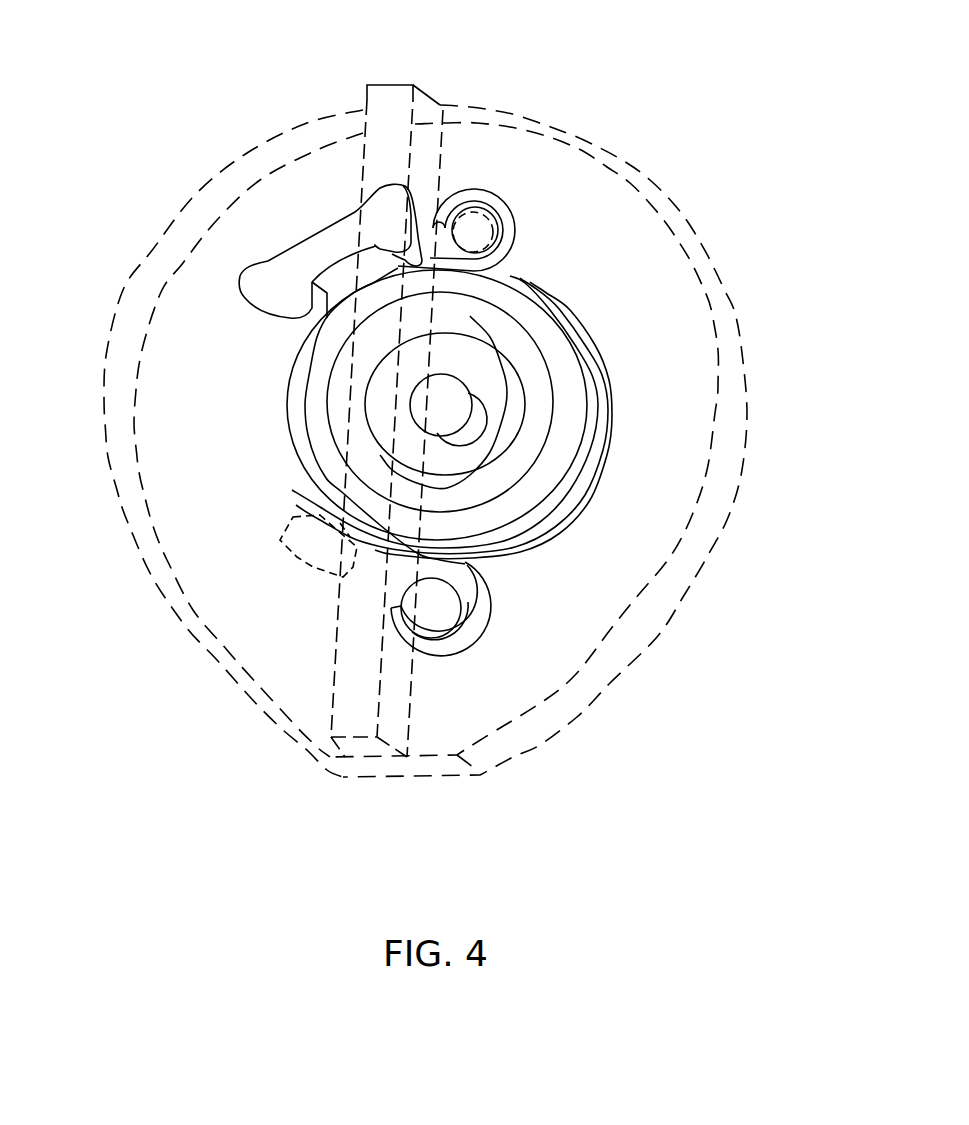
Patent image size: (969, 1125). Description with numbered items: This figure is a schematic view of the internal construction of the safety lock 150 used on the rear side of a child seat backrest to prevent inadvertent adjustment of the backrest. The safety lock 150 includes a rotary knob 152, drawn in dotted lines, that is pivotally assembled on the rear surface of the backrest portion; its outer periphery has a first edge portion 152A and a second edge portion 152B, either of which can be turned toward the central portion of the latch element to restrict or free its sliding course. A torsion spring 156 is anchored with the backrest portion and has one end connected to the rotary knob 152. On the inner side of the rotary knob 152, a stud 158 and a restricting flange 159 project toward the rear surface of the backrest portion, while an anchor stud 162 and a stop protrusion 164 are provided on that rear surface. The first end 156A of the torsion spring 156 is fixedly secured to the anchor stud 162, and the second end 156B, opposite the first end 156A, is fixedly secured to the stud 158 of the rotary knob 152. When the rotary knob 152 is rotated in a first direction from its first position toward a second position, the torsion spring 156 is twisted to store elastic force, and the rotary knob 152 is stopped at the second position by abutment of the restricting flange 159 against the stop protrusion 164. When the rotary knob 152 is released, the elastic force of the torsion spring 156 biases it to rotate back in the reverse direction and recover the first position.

The safety lock 150 is at (702, 68).
The rotary knob 152 is at (388, 97).
The first edge portion 152A is at (377, 773).
The second edge portion 152B is at (729, 448).
The torsion spring 156 is at (587, 344).
The first end 156A is at (517, 237).
The second end 156B is at (482, 598).
The stud 158 is at (482, 223).
The restricting flange 159 is at (290, 527).
The anchor stud 162 is at (432, 613).
The stop protrusion 164 is at (277, 299).